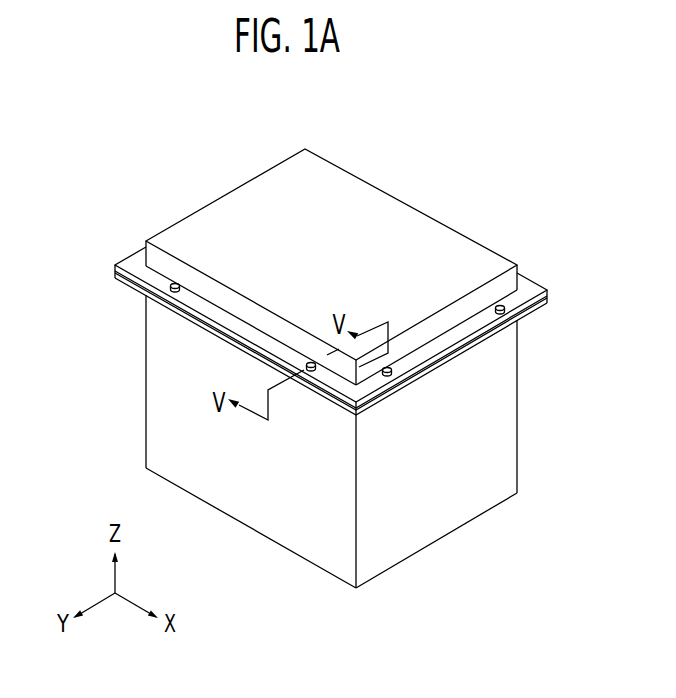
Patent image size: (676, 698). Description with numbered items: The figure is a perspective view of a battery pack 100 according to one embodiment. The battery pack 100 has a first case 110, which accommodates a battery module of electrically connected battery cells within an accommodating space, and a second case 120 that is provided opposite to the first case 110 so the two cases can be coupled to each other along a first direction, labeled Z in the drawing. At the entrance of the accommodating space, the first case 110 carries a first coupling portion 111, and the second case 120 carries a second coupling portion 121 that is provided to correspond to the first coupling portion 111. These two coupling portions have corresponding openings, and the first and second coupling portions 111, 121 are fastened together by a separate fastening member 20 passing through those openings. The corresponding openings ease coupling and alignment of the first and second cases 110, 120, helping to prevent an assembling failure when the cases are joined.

The battery pack 100 is at (455, 162).
The first case 110 is at (521, 439).
The first coupling portion 111 is at (122, 280).
The second case 120 is at (252, 196).
The second coupling portion 121 is at (138, 262).
The fastening member 20 is at (306, 364).